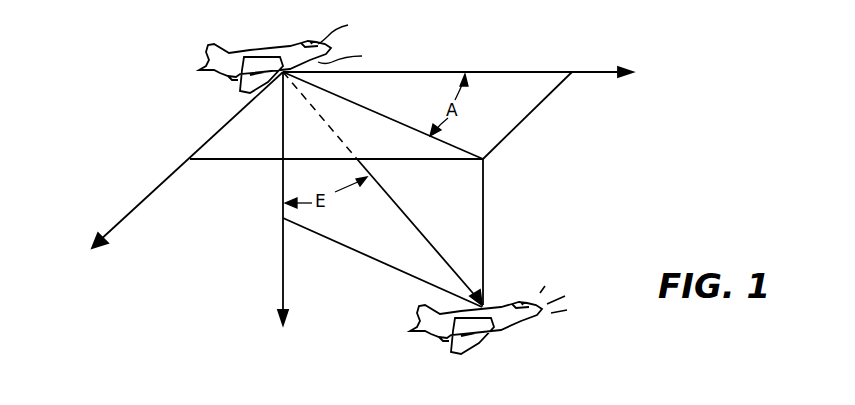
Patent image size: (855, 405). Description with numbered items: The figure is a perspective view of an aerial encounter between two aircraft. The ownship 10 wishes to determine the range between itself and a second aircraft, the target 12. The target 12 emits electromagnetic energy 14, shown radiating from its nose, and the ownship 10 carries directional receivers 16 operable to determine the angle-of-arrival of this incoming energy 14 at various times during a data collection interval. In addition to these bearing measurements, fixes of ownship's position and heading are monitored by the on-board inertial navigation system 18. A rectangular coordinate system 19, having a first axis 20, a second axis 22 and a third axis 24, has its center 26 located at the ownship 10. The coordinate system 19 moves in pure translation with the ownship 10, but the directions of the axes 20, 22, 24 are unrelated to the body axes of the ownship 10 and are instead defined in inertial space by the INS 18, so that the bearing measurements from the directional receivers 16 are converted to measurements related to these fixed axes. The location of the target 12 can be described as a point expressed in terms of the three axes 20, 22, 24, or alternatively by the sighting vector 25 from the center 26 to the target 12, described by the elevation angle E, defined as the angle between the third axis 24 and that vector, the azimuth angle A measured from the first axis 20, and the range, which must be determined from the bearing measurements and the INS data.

The ownship 10 is at (258, 44).
The target 12 is at (500, 333).
The electromagnetic energy 14 is at (566, 300).
The directional receivers 16 is at (344, 28).
The inertial navigation system 18 is at (352, 54).
The rectangular coordinate system 19 is at (480, 60).
The X1 axis 20 is at (610, 63).
The X2 axis 22 is at (138, 207).
The X3 axis 24 is at (272, 297).
The sighting vector 25 is at (443, 258).
The center 26 is at (278, 82).